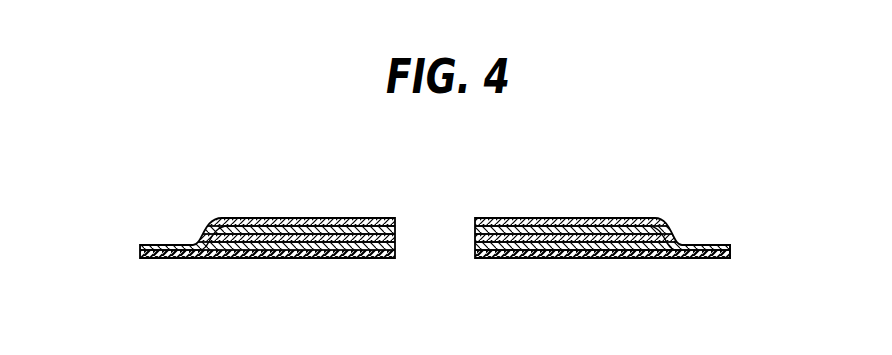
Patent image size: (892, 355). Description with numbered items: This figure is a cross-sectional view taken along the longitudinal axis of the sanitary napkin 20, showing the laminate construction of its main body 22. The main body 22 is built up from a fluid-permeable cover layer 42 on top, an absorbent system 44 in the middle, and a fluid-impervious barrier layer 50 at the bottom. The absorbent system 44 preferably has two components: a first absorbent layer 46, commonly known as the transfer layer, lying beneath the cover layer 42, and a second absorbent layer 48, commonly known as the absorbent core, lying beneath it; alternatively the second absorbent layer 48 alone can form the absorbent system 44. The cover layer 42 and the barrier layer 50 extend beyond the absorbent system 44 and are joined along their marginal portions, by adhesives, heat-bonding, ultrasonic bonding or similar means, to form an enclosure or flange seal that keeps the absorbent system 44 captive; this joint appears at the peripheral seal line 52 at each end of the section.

The sanitary napkin 20 is at (118, 199).
The main body 22 is at (717, 295).
The fluid-permeable cover layer 42 is at (315, 218).
The absorbent system 44 is at (400, 222).
The first absorbent layer 46 is at (473, 230).
The second absorbent layer 48 is at (475, 248).
The fluid-impervious barrier layer 50 is at (565, 258).
The peripheral seal line 52 is at (175, 245).